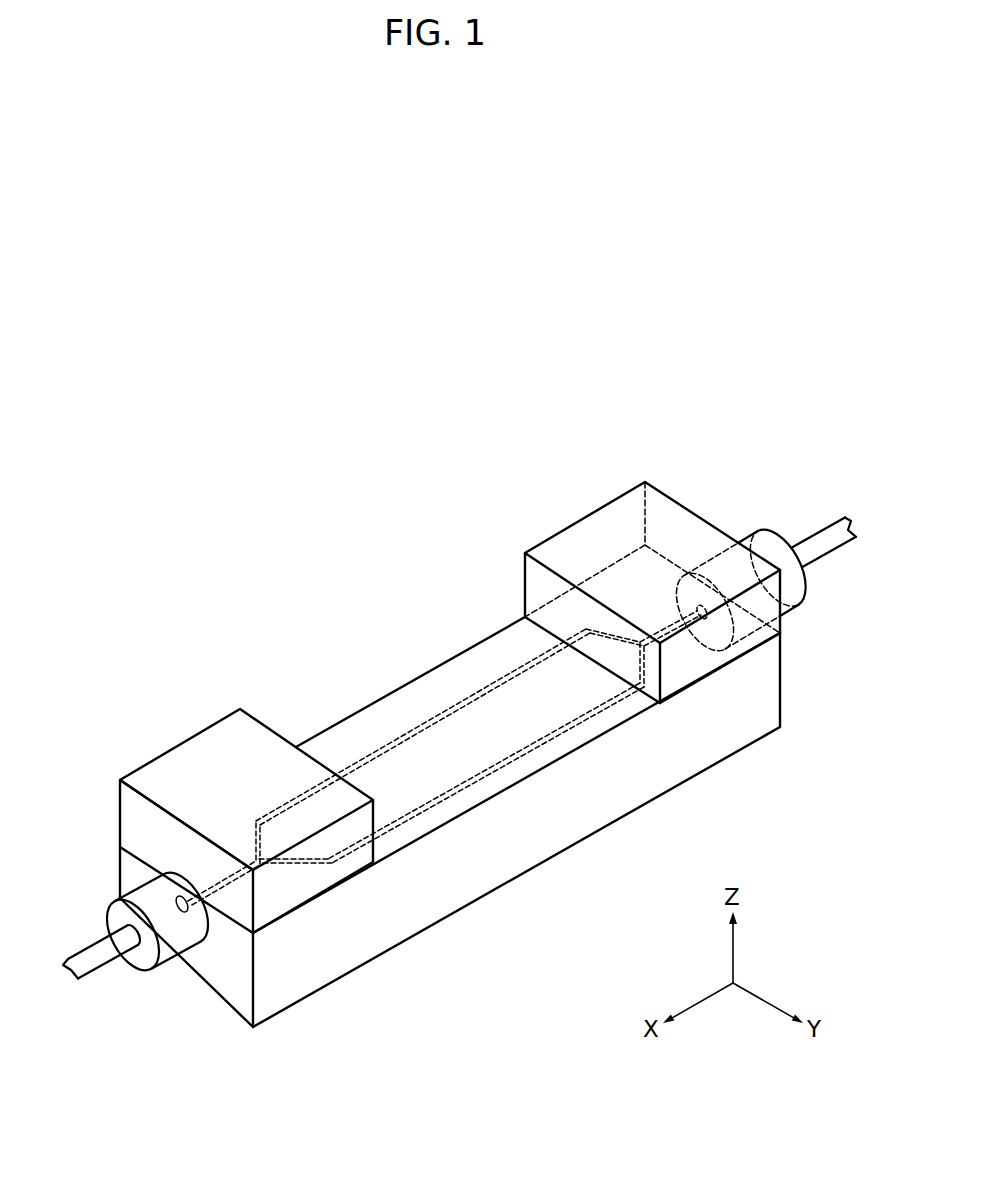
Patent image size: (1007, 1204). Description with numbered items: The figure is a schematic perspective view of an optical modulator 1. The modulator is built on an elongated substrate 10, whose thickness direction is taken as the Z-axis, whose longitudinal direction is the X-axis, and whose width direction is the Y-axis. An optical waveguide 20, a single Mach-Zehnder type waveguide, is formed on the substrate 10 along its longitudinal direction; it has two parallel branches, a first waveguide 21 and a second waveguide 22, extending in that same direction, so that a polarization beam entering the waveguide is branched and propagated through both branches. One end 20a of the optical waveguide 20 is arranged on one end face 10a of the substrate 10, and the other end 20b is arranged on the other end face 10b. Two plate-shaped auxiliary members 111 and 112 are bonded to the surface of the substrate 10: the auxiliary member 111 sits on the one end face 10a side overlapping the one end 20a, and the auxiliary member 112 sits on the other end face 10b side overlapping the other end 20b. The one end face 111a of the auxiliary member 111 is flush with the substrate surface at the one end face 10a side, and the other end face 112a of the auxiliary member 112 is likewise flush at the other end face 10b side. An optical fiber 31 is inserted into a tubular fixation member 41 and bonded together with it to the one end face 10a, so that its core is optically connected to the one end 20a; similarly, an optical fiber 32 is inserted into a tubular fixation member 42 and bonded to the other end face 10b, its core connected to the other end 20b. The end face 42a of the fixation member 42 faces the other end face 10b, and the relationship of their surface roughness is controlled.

The optical modulator 1 is at (458, 491).
The substrate 10 is at (707, 757).
The one end face of substrate 10a is at (227, 1000).
The other end face of substrate 10b is at (782, 693).
The auxiliary member 111 is at (183, 750).
The one end face of auxiliary member 111a is at (127, 808).
The auxiliary member 112 is at (580, 528).
The other end face of auxiliary member 112a is at (647, 483).
The optical waveguide 20 is at (374, 744).
The one end of optical waveguide 20a is at (180, 910).
The other end of optical waveguide 20b is at (702, 605).
The first waveguide 21 is at (425, 723).
The second waveguide 22 is at (523, 745).
The optical fiber 31 is at (97, 960).
The optical fiber 32 is at (817, 540).
The fixation member 41 is at (107, 917).
The fixation member 42 is at (763, 537).
The end face of fixation member 42a is at (771, 636).